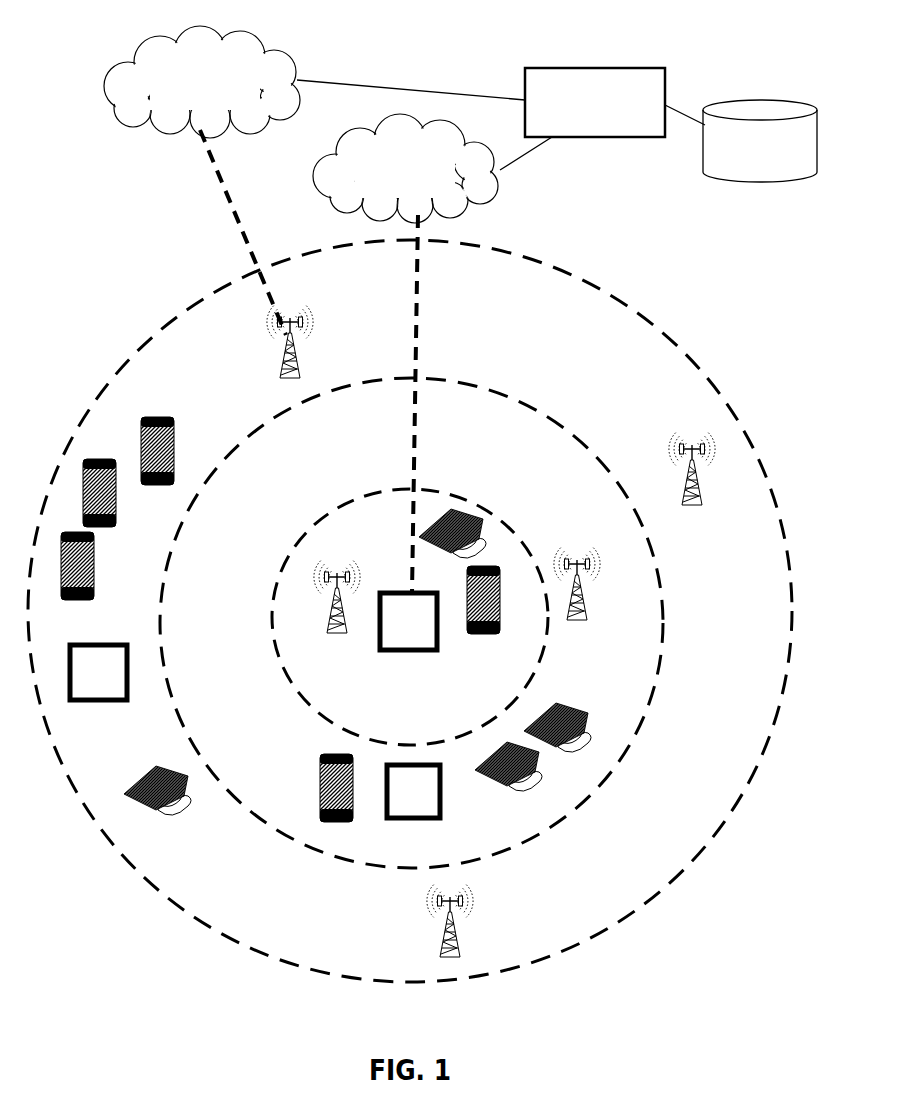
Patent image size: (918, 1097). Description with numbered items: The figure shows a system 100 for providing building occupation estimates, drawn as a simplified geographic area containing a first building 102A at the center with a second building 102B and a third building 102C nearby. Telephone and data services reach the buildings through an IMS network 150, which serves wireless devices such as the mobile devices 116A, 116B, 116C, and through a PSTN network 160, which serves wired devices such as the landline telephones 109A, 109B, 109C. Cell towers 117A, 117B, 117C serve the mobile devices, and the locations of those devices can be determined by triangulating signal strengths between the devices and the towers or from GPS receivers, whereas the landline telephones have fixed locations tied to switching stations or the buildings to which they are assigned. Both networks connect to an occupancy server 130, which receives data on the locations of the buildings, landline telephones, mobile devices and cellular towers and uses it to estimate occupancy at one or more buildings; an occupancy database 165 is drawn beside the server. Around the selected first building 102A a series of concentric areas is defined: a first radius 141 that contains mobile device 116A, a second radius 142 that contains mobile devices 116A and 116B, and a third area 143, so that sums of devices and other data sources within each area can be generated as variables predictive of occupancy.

The system 100 is at (411, 1028).
The building 1 102A is at (400, 625).
The building 2 102B is at (430, 790).
The building 3 102C is at (100, 690).
The landline telephone 109A is at (442, 510).
The landline telephones 109B is at (535, 765).
The landline telephone 109C is at (140, 805).
The mobile device 116A is at (493, 567).
The mobile device 116B is at (320, 803).
The mobile devices 116C is at (98, 463).
The cell tower 117A is at (335, 578).
The cell tower 117B is at (588, 617).
The cell tower 117C is at (288, 316).
The occupancy server 130 is at (614, 68).
The first radius 141 is at (410, 617).
The second radius 142 is at (411, 623).
The third area 143 is at (410, 611).
The IMS network 150 is at (120, 80).
The PSTN network 160 is at (475, 190).
The occupancy database 165 is at (743, 172).